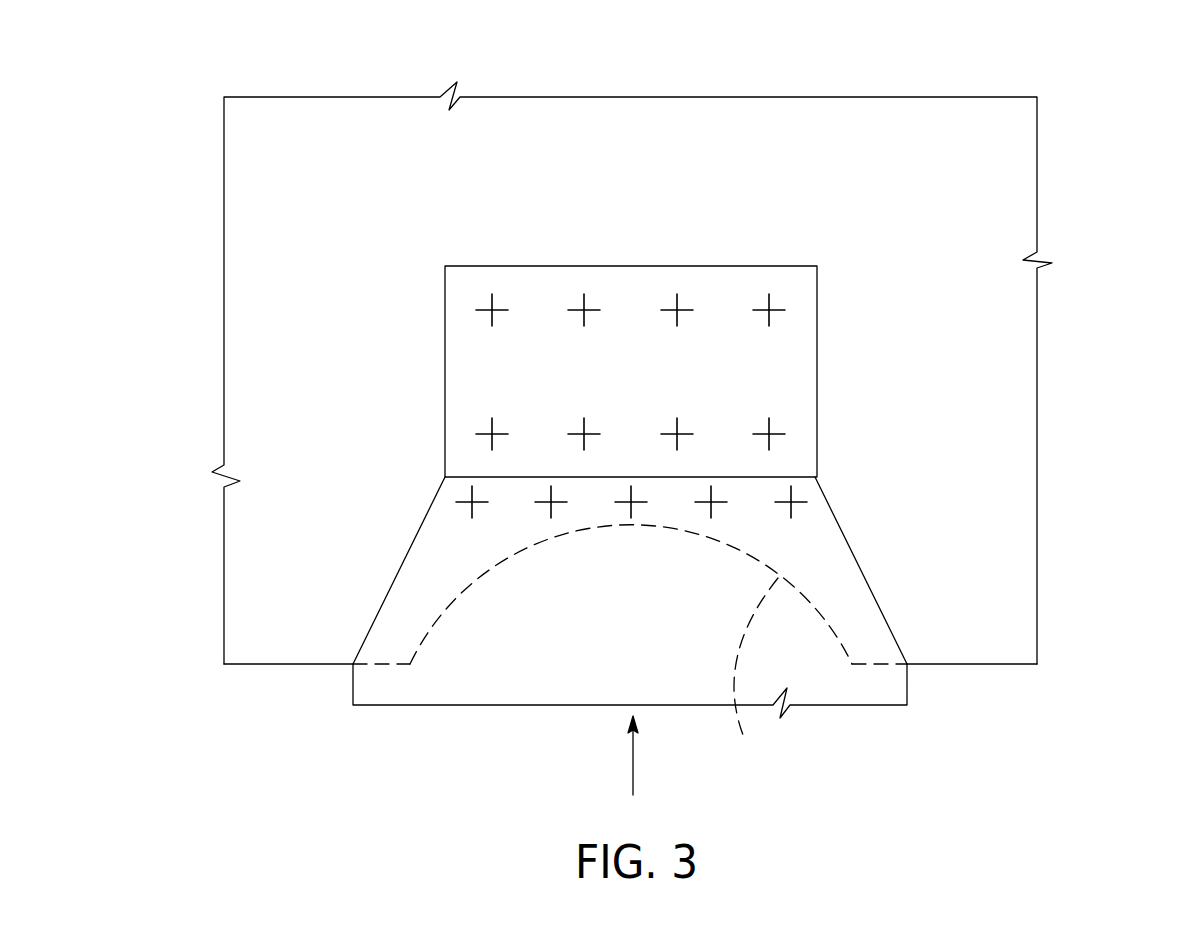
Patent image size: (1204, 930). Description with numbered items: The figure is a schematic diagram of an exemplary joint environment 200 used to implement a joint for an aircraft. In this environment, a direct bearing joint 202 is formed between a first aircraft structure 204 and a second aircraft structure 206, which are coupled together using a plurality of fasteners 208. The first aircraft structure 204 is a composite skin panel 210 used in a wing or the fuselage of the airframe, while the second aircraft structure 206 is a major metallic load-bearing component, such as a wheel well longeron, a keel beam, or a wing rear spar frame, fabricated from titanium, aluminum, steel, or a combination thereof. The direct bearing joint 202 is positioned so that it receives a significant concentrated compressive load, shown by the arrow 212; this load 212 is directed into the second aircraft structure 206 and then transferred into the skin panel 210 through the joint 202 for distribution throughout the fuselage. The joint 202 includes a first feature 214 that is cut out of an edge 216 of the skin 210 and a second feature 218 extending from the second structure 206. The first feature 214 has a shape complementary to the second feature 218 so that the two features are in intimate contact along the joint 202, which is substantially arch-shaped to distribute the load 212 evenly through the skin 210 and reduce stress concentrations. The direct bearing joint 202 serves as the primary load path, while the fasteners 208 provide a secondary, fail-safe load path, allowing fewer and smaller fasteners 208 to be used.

The joint environment 200 is at (661, 420).
The direct bearing joint 202 is at (840, 631).
The first aircraft structure 204 is at (273, 543).
The second aircraft structure 206 is at (848, 578).
The fasteners 208 is at (766, 307).
The skin panel 210 is at (968, 514).
The compressive load 212 is at (633, 775).
The first feature 214 is at (438, 622).
The edge 216 is at (272, 665).
The second feature 218 is at (752, 673).